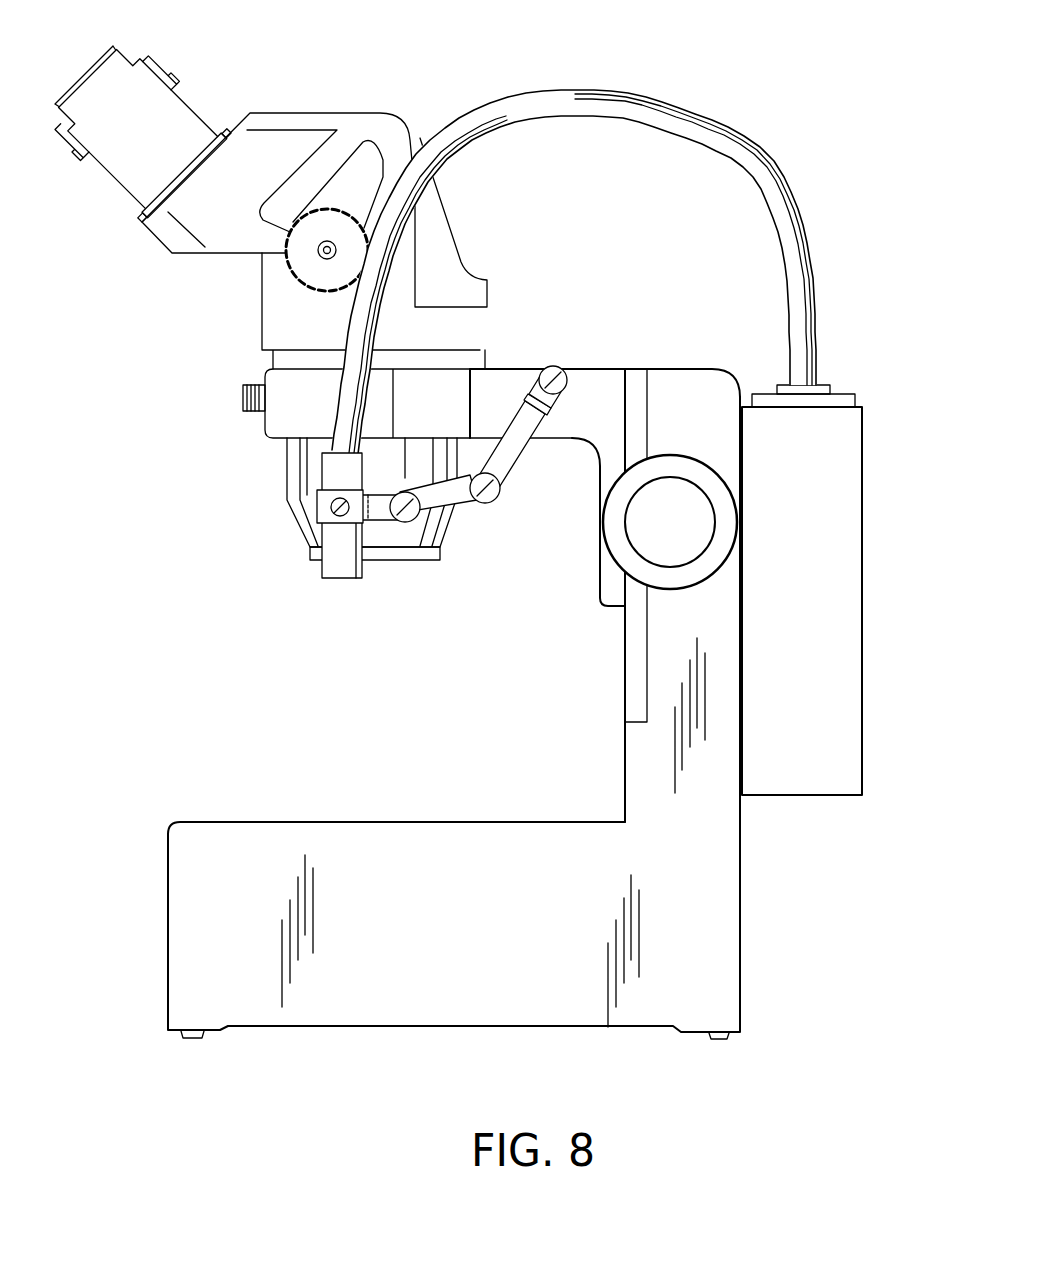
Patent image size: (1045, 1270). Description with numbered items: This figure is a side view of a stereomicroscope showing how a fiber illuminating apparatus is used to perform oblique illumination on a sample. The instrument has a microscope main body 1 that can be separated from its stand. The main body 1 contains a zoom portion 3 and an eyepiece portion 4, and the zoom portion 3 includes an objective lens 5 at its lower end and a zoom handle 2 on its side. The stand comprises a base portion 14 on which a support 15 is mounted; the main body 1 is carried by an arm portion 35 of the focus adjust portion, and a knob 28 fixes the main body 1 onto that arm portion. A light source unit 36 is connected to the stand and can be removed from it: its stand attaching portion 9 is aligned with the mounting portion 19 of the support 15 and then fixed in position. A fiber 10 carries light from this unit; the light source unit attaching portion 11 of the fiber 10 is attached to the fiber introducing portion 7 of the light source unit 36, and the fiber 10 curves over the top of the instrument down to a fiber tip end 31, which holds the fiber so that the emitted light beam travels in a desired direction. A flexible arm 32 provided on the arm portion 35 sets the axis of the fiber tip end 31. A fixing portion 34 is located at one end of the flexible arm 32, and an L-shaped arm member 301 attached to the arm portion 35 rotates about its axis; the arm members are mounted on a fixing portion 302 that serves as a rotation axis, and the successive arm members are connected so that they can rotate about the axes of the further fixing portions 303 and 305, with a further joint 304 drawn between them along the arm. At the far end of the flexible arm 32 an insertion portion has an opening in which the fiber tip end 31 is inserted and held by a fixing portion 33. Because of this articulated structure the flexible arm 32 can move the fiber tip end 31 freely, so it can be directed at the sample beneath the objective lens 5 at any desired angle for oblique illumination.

The microscope main body 1 is at (388, 130).
The zoom handle 2 is at (300, 257).
The zoom portion 3 is at (262, 322).
The eyepiece portion 4 is at (187, 127).
The objective lens 5 is at (412, 540).
The fiber introducing portion 7 is at (850, 400).
The stand attaching portion 9 is at (740, 727).
The fiber 10 is at (663, 107).
The light source unit attaching portion 11 is at (820, 387).
The base portion 14 is at (228, 828).
The support 15 is at (712, 383).
The mounting portion 19 is at (738, 756).
The knob 28 is at (243, 398).
The fiber tip end 31 is at (332, 575).
The flexible arm 32 is at (511, 464).
The fixing portion 33 is at (330, 500).
The fixing portion 34 is at (550, 373).
The arm portion 35 is at (273, 422).
The light source unit 36 is at (843, 650).
The L-shaped arm member 301 is at (533, 390).
The fixing portion 302 is at (543, 413).
The fixing portion 303 is at (483, 507).
The third arm segment 304 is at (440, 503).
The fixing portion 305 is at (400, 520).